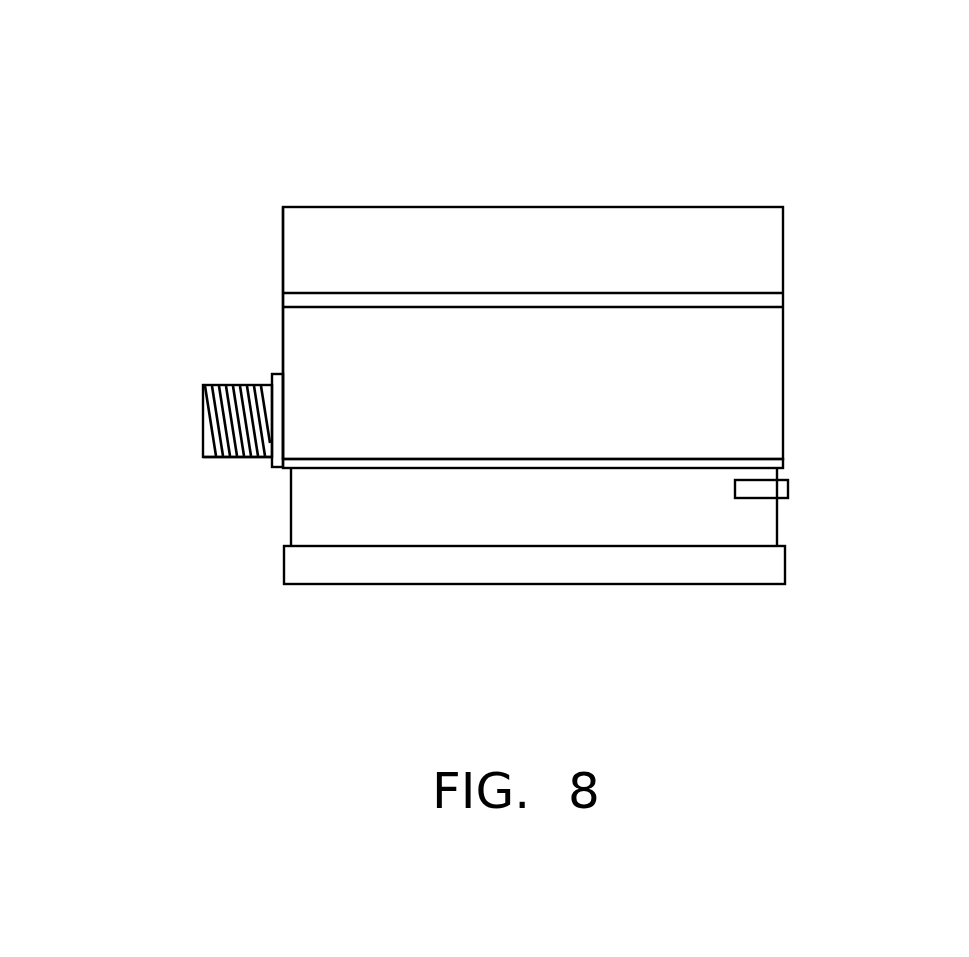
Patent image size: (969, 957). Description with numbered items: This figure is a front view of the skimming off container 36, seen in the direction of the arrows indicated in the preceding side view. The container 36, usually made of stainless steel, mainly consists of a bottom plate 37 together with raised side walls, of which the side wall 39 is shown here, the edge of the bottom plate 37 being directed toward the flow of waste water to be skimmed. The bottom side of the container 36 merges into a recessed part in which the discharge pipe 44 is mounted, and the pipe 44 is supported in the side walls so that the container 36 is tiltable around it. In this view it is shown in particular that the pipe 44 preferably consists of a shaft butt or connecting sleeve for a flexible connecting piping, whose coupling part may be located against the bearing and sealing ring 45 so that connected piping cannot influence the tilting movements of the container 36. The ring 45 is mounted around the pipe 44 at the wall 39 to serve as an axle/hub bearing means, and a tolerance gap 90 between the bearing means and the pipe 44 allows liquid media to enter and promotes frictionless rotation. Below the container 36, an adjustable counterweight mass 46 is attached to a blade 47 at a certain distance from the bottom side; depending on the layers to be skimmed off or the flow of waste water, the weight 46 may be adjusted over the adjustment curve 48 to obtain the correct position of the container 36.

The skimming off container 36 is at (716, 149).
The bottom plate 37 is at (458, 292).
The side wall 39 is at (283, 321).
The bearing and sealing ring 45 is at (272, 374).
The discharge pipe 44 is at (203, 425).
The tolerance gap 90 is at (260, 457).
The blade 47 is at (318, 505).
The adjustable weight mass 46 is at (298, 567).
The adjustment curve 48 is at (783, 492).